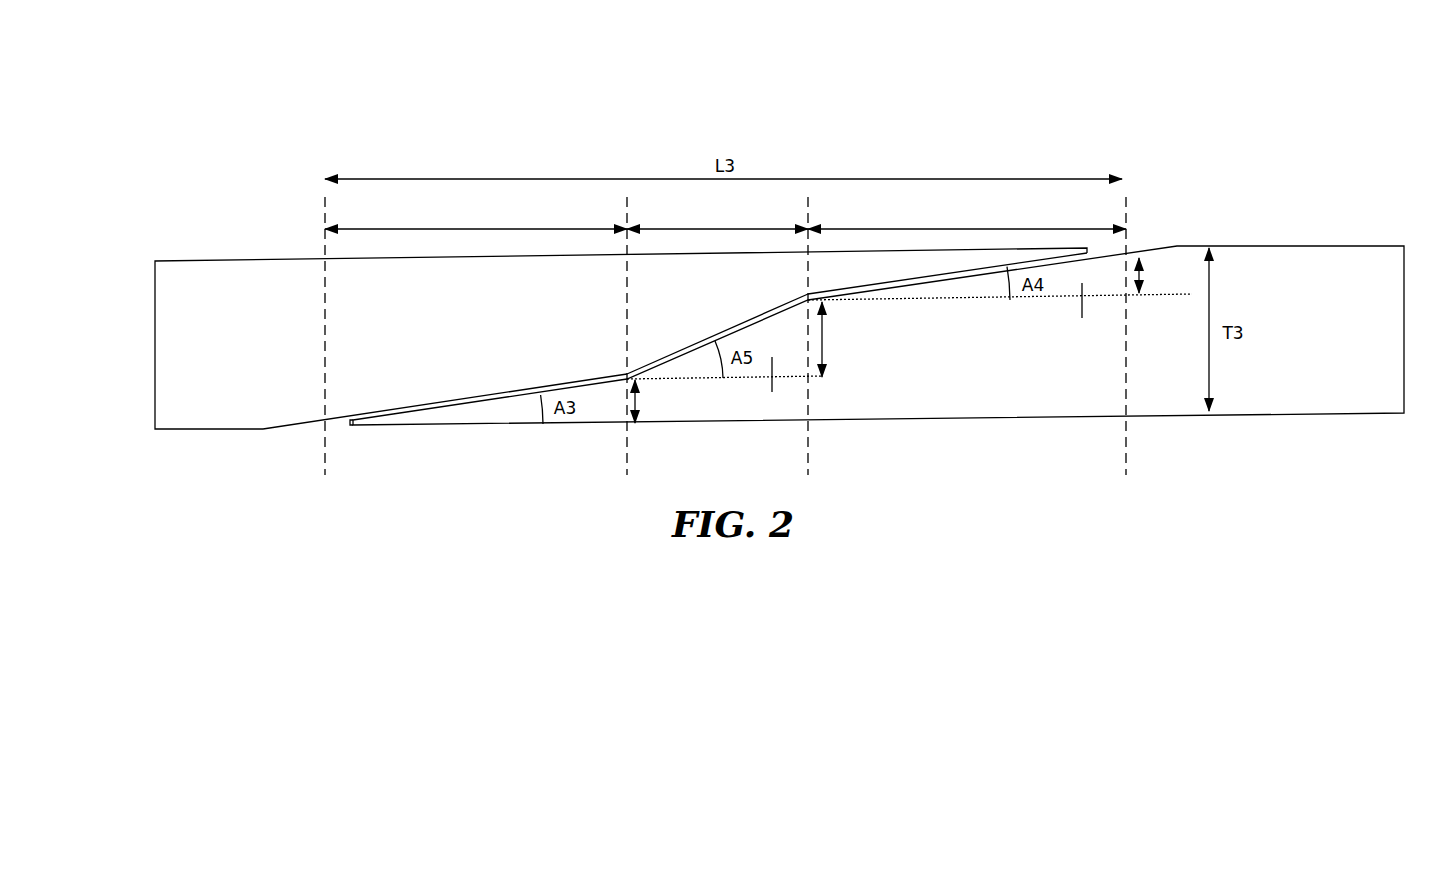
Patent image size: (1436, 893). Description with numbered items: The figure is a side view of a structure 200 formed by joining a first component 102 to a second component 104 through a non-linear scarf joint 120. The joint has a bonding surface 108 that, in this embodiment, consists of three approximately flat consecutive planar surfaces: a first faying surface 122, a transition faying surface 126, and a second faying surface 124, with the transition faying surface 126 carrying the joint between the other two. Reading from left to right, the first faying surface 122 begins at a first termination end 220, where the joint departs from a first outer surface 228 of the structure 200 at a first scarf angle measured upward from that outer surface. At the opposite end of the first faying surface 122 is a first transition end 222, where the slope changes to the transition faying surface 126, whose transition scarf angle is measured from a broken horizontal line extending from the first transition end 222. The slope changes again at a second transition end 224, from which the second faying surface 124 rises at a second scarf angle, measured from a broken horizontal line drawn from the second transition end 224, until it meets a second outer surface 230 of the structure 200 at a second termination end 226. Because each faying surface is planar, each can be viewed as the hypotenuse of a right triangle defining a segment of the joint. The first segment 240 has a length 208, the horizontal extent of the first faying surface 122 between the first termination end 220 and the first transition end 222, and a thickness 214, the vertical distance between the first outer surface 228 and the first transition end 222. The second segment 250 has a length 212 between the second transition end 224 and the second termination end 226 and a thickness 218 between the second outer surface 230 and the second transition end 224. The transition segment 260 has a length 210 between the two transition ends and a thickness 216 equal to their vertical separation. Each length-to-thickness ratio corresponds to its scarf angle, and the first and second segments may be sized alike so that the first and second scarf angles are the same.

The structure 200 is at (328, 87).
The first component 102 is at (260, 278).
The second component 104 is at (1310, 399).
The bonding surface 108 is at (725, 330).
The non-linear scarf joint 120 is at (1158, 223).
The first faying surface 122 is at (477, 399).
The second faying surface 124 is at (940, 280).
The transition faying surface 126 is at (758, 320).
The length 208 is at (476, 217).
The length 210 is at (717, 217).
The length 212 is at (967, 217).
The thickness 214 is at (655, 401).
The thickness 216 is at (840, 339).
The thickness 218 is at (1160, 275).
The first termination end 220 is at (353, 427).
The first transition end 222 is at (627, 377).
The second transition end 224 is at (808, 295).
The second termination end 226 is at (1153, 255).
The first outer surface 228 is at (462, 432).
The second outer surface 230 is at (1295, 245).
The first segment 240 is at (597, 407).
The second segment 250 is at (1082, 312).
The transition segment 260 is at (770, 386).